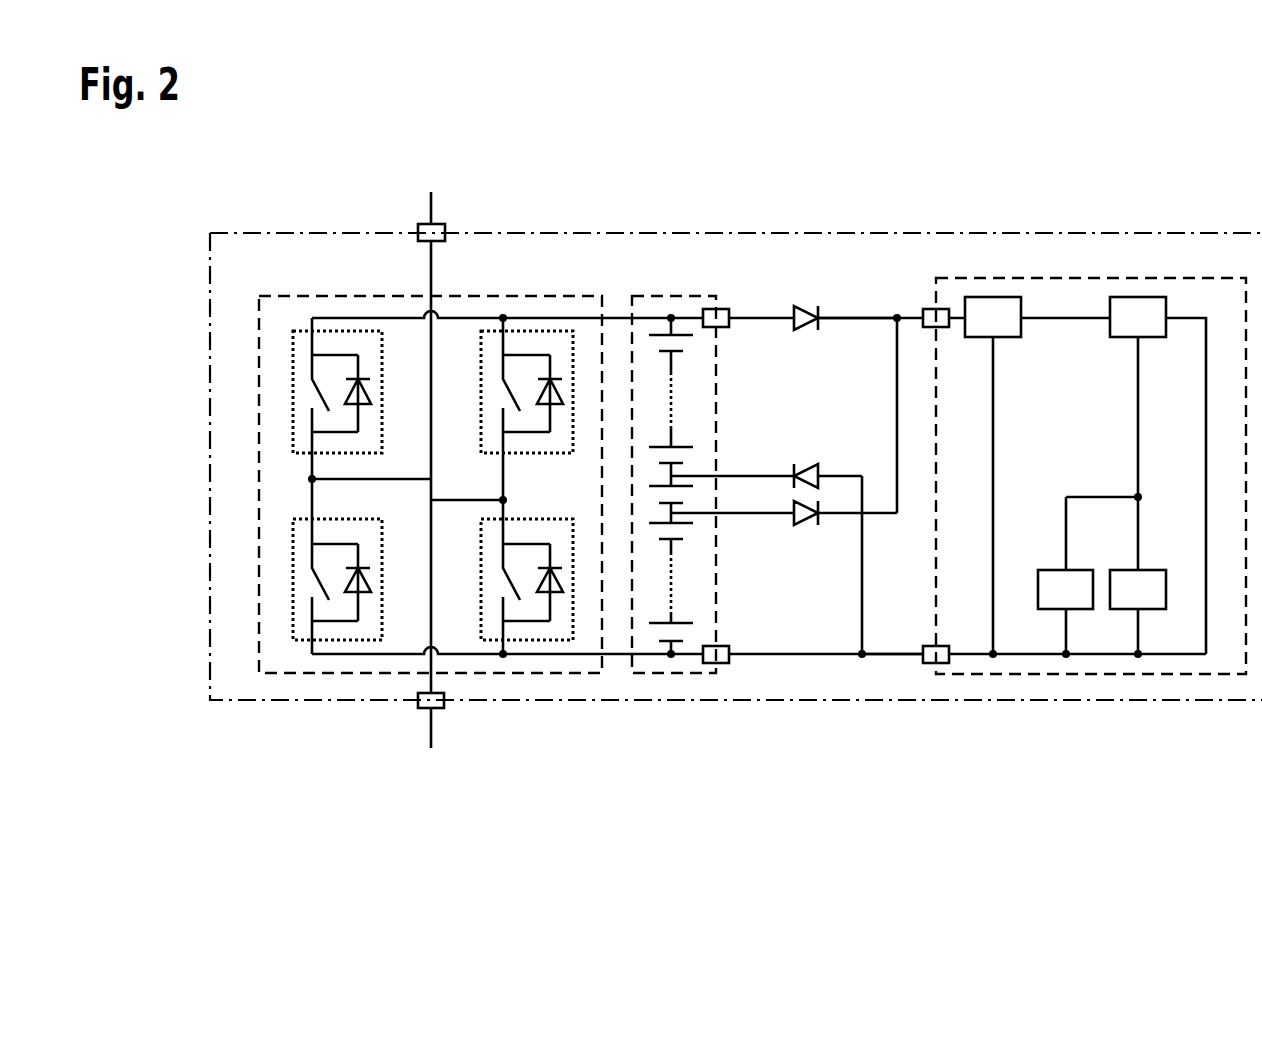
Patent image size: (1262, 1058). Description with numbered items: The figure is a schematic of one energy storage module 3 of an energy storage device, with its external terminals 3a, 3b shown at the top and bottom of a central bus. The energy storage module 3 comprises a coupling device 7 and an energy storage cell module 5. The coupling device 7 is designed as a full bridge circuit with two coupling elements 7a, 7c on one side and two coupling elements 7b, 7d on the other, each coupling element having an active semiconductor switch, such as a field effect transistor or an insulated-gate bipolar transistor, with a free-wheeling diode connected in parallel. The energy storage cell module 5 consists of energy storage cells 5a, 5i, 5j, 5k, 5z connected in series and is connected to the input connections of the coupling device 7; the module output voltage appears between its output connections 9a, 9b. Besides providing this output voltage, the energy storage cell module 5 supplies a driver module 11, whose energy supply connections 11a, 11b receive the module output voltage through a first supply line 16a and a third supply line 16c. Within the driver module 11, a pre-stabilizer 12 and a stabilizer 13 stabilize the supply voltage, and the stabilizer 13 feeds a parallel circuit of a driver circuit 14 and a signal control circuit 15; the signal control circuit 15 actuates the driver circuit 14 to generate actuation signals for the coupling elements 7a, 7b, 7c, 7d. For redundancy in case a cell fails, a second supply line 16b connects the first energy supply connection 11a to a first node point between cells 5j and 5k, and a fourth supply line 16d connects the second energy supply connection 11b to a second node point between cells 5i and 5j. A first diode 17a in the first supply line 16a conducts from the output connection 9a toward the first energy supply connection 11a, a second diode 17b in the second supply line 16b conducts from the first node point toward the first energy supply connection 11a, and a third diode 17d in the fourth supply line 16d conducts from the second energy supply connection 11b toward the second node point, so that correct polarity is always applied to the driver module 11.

The energy storage module 3 is at (316, 232).
The first terminal 3a is at (443, 228).
The second terminal 3b is at (441, 708).
The energy storage cell module 5 is at (684, 296).
The energy storage cell 5a is at (683, 343).
The energy storage cell 5i is at (683, 456).
The energy storage cell 5j is at (683, 495).
The energy storage cell 5k is at (683, 531).
The energy storage cell 5z is at (683, 634).
The coupling device 7 is at (515, 296).
The coupling element 7a is at (292, 398).
The coupling element 7b is at (493, 330).
The coupling element 7c is at (292, 585).
The coupling element 7d is at (548, 641).
The output connection 9a is at (729, 312).
The output connection 9b is at (723, 661).
The driver module 11 is at (1075, 278).
The energy supply connection 11a is at (930, 314).
The energy supply connection 11b is at (942, 661).
The pre-stabilizer 12 is at (989, 308).
The stabilizer 13 is at (1135, 305).
The driver circuit 14 is at (1050, 585).
The signal control circuit 15 is at (1152, 585).
The first supply line 16a is at (860, 320).
The second supply line 16b is at (885, 516).
The third supply line 16c is at (897, 661).
The fourth supply line 16d is at (843, 474).
The first diode 17a is at (820, 306).
The second diode 17b is at (800, 526).
The third diode 17d is at (797, 468).